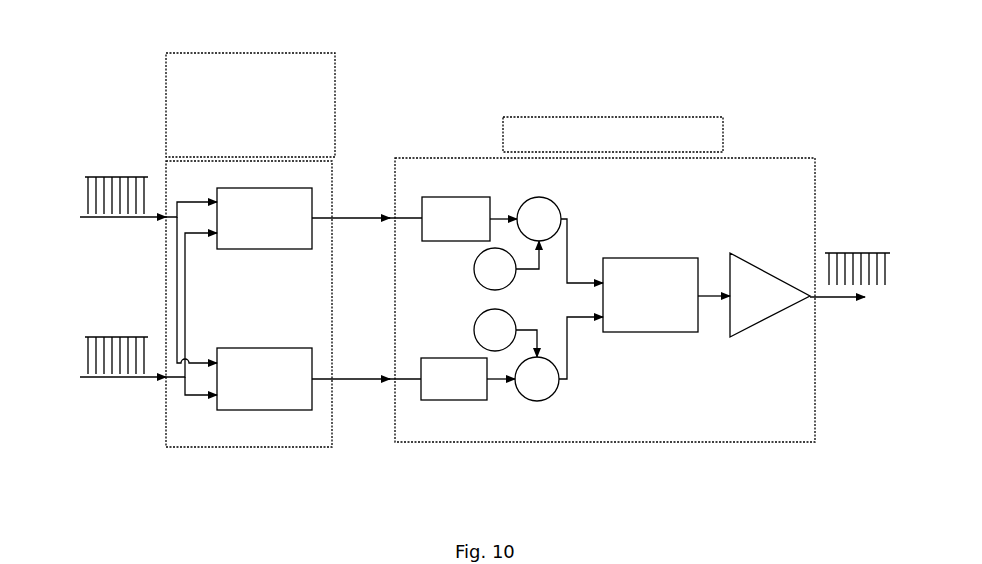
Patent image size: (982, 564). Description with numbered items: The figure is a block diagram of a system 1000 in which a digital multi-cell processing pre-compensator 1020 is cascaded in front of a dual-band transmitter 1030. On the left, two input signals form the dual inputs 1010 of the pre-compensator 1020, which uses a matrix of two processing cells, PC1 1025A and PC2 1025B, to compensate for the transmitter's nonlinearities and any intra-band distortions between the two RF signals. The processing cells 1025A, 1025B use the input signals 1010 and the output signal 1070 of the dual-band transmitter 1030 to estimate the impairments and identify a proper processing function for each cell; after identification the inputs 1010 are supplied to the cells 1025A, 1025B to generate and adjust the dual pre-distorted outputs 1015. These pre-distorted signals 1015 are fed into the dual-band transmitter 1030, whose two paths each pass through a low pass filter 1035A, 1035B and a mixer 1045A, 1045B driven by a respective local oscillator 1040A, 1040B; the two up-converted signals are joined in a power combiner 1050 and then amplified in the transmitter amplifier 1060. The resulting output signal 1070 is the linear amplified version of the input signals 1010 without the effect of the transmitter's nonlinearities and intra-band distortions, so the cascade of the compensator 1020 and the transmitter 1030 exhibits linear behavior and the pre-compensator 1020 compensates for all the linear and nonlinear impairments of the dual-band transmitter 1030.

The system 1000 is at (463, 57).
The dual inputs 1010 is at (60, 318).
The dual pre-distorted outputs 1015 is at (357, 400).
The digital multi-cell processing pre-compensator 1020 is at (240, 450).
The processing cell PC1 1025A is at (264, 209).
The processing cell PC2 1025B is at (264, 370).
The dual-band transmitter 1030 is at (600, 440).
The low pass filter 1035A is at (427, 197).
The low pass filter 1035B is at (472, 400).
The local oscillator 1040A is at (472, 283).
The local oscillator 1040B is at (473, 313).
The mixer 1045A is at (533, 197).
The mixer 1045B is at (550, 405).
The power combiner 1050 is at (632, 332).
The transmitter amplifier 1060 is at (752, 258).
The output signal 1070 is at (847, 250).